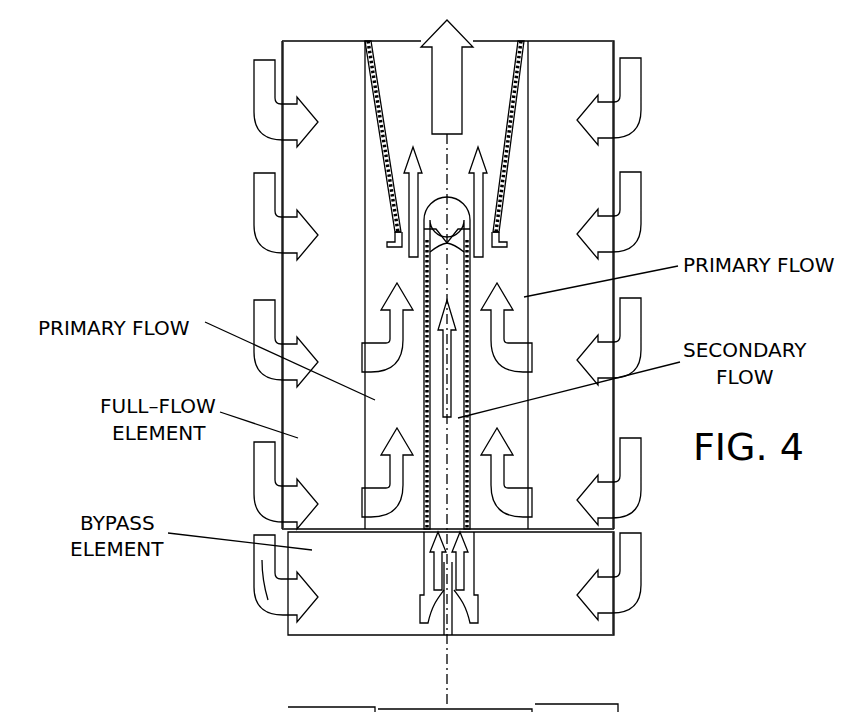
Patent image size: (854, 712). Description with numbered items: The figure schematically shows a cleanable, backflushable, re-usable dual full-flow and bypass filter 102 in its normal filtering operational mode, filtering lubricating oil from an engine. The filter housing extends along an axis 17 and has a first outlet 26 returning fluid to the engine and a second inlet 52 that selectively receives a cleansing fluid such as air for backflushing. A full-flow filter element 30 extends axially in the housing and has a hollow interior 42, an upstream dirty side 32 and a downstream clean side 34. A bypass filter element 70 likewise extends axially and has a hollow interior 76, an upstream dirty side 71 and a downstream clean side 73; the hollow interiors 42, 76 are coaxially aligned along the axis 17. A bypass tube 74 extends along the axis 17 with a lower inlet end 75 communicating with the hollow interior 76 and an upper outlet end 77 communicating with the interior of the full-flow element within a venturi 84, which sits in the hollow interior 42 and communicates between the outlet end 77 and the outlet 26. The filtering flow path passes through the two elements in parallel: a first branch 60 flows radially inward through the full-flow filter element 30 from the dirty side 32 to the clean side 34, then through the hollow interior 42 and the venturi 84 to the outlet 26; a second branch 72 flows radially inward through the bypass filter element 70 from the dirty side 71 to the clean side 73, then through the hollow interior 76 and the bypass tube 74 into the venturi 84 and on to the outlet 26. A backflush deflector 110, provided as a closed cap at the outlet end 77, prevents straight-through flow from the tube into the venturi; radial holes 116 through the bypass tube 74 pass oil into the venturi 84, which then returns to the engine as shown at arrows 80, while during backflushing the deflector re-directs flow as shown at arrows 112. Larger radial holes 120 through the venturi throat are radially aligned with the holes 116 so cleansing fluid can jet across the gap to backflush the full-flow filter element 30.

The axis 17 is at (450, 505).
The first outlet 26 is at (370, 58).
The full-flow filter element 30 is at (292, 284).
The upstream dirty side 32 is at (615, 425).
The downstream clean side 34 is at (520, 431).
The hollow interior 42 is at (416, 397).
The second inlet 52 is at (418, 637).
The first branch 60 is at (287, 378).
The bypass filter element 70 is at (296, 630).
The upstream dirty side 71 is at (615, 615).
The second branch 72 is at (266, 602).
The downstream clean side 73 is at (463, 635).
The bypass tube 74 is at (426, 498).
The lower inlet end 75 is at (470, 532).
The hollow interior 76 is at (447, 637).
The upper outlet end 77 is at (528, 259).
The arrows 80 is at (470, 158).
The venturi 84 is at (505, 175).
The dual full-flow and bypass filter 102 is at (276, 163).
The backflush deflector 110 is at (424, 213).
The arrows 112 is at (430, 251).
The radial holes 116 is at (484, 222).
The radial holes 120 is at (392, 245).